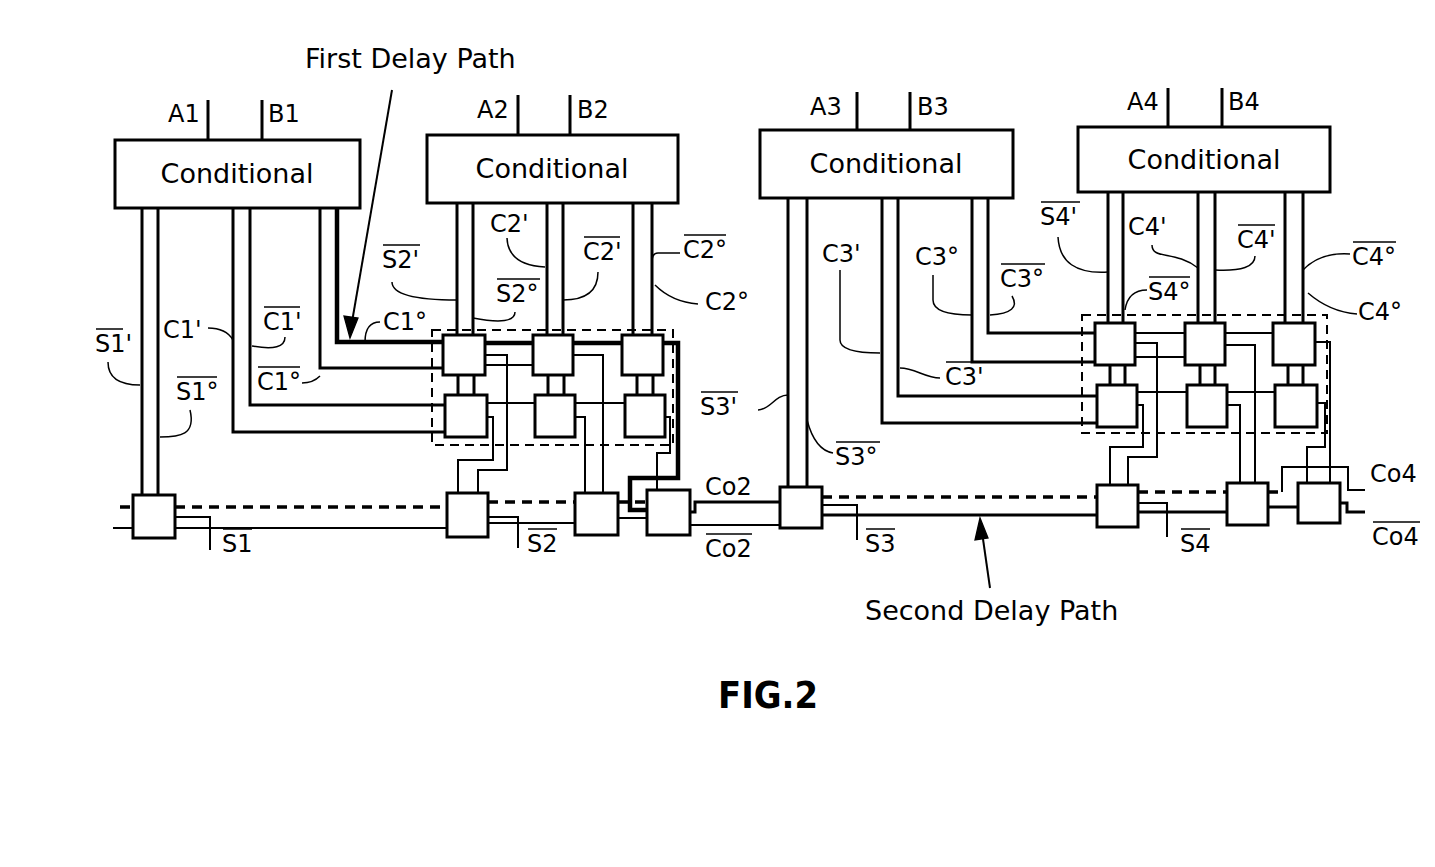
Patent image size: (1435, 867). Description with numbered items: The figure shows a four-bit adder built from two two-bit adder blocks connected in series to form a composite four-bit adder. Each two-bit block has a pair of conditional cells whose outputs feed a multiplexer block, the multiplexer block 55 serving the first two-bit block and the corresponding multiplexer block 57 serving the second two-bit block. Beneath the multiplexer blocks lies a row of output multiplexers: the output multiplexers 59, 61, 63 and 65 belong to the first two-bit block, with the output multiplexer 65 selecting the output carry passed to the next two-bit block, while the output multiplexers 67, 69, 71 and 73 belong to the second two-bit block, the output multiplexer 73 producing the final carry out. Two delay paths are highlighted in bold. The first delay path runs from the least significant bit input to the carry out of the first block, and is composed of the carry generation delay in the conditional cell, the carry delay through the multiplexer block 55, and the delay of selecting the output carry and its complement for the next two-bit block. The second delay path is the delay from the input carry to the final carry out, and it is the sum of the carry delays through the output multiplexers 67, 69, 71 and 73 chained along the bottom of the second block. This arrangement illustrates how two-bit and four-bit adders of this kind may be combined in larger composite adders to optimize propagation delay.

The multiplexer block 55 is at (420, 442).
The multiplexer block 57 is at (1082, 432).
The output multiplexer 59 is at (160, 540).
The output multiplexer 61 is at (468, 540).
The output multiplexer 63 is at (600, 538).
The output multiplexer 65 is at (675, 538).
The output multiplexer 67 is at (795, 531).
The output multiplexer 69 is at (1123, 529).
The output multiplexer 71 is at (1240, 527).
The output multiplexer 73 is at (1313, 525).